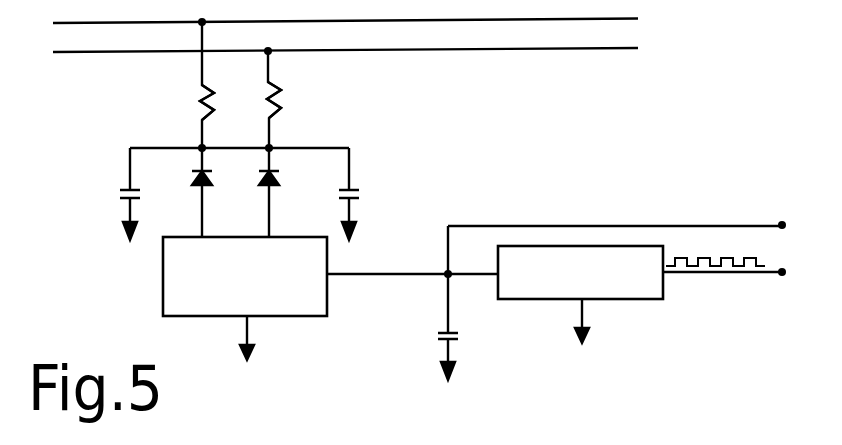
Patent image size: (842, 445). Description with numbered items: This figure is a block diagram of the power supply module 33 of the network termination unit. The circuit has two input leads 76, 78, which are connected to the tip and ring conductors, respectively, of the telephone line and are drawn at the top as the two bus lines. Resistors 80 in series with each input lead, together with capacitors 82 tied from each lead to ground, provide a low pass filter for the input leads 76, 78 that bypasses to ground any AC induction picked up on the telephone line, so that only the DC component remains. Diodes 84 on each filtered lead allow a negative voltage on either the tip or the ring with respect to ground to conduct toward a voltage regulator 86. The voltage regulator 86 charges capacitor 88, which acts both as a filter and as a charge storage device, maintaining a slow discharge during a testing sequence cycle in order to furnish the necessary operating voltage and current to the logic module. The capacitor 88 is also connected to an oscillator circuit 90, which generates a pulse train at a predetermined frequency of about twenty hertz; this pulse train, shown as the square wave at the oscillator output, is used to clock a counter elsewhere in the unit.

The power supply module 33 is at (598, 205).
The input lead 76 is at (202, 75).
The input lead 78 is at (269, 72).
The resistor 80 is at (202, 103).
The capacitor 82 is at (130, 170).
The diode 84 is at (265, 184).
The voltage regulator 86 is at (328, 305).
The capacitor 88 is at (448, 305).
The oscillator circuit 90 is at (663, 300).